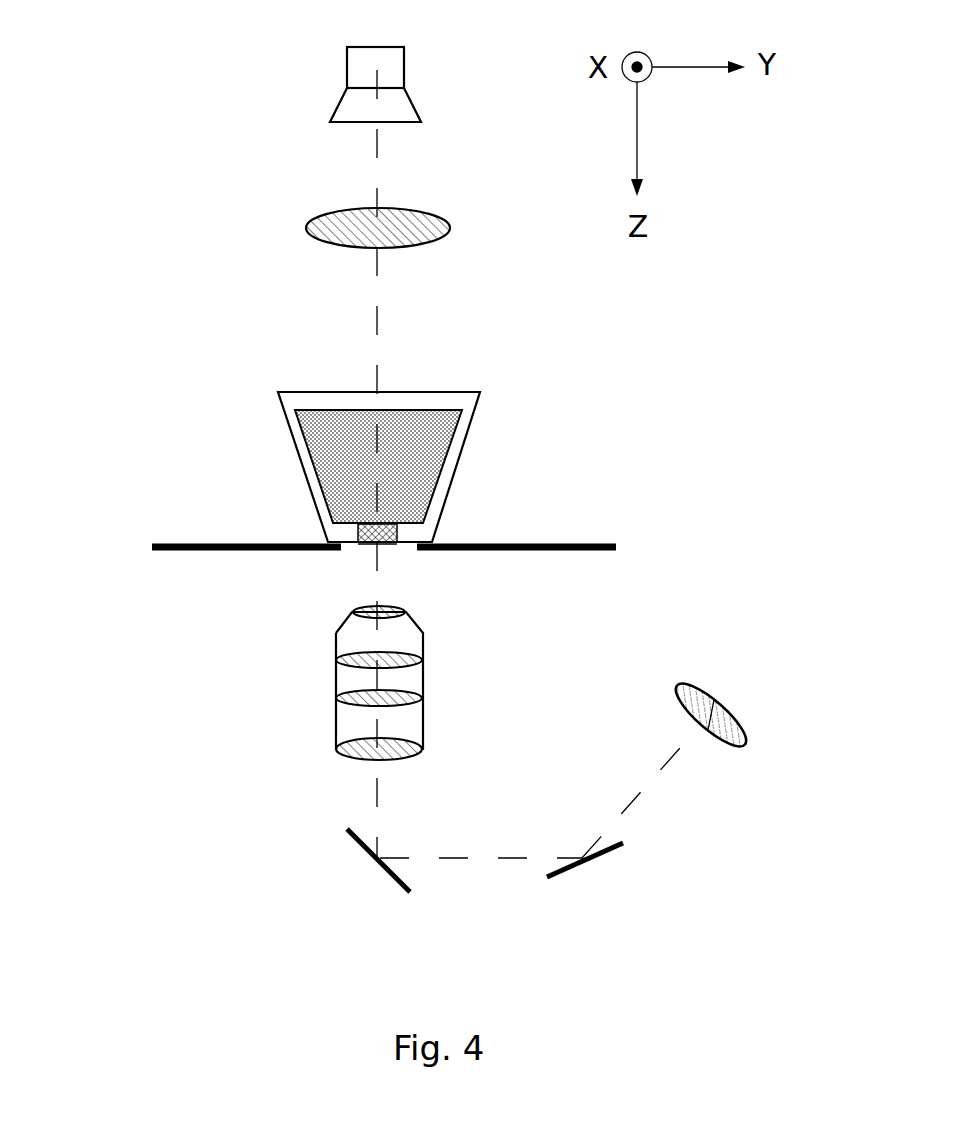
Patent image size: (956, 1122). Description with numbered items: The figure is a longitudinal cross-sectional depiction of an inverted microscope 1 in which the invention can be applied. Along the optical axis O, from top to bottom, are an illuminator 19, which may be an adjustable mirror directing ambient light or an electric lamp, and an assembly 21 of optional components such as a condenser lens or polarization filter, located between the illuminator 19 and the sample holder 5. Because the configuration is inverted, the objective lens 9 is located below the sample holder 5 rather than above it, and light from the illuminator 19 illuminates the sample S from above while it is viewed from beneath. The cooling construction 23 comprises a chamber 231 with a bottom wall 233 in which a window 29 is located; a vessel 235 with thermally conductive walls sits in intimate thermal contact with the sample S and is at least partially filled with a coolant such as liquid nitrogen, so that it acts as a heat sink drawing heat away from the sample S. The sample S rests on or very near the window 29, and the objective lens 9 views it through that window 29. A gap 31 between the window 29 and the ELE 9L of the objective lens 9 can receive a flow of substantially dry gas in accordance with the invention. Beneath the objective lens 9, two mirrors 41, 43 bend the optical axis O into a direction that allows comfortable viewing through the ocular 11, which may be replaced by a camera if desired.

The microscope 1 is at (136, 185).
The illuminator 19 is at (358, 73).
The assembly 21 is at (340, 222).
The optical axis O is at (378, 313).
The cooling construction 23 is at (135, 393).
The chamber 231 is at (453, 392).
The vessel 235 is at (442, 455).
The bottom wall 233 is at (412, 565).
The sample S is at (357, 523).
The window 29 is at (352, 545).
The gap 31 is at (100, 542).
The sample holder 5 is at (587, 542).
The objective lens 9 is at (368, 680).
The ELE 9L is at (390, 606).
The ocular 11 is at (747, 732).
The mirror 41 is at (363, 850).
The mirror 43 is at (563, 877).